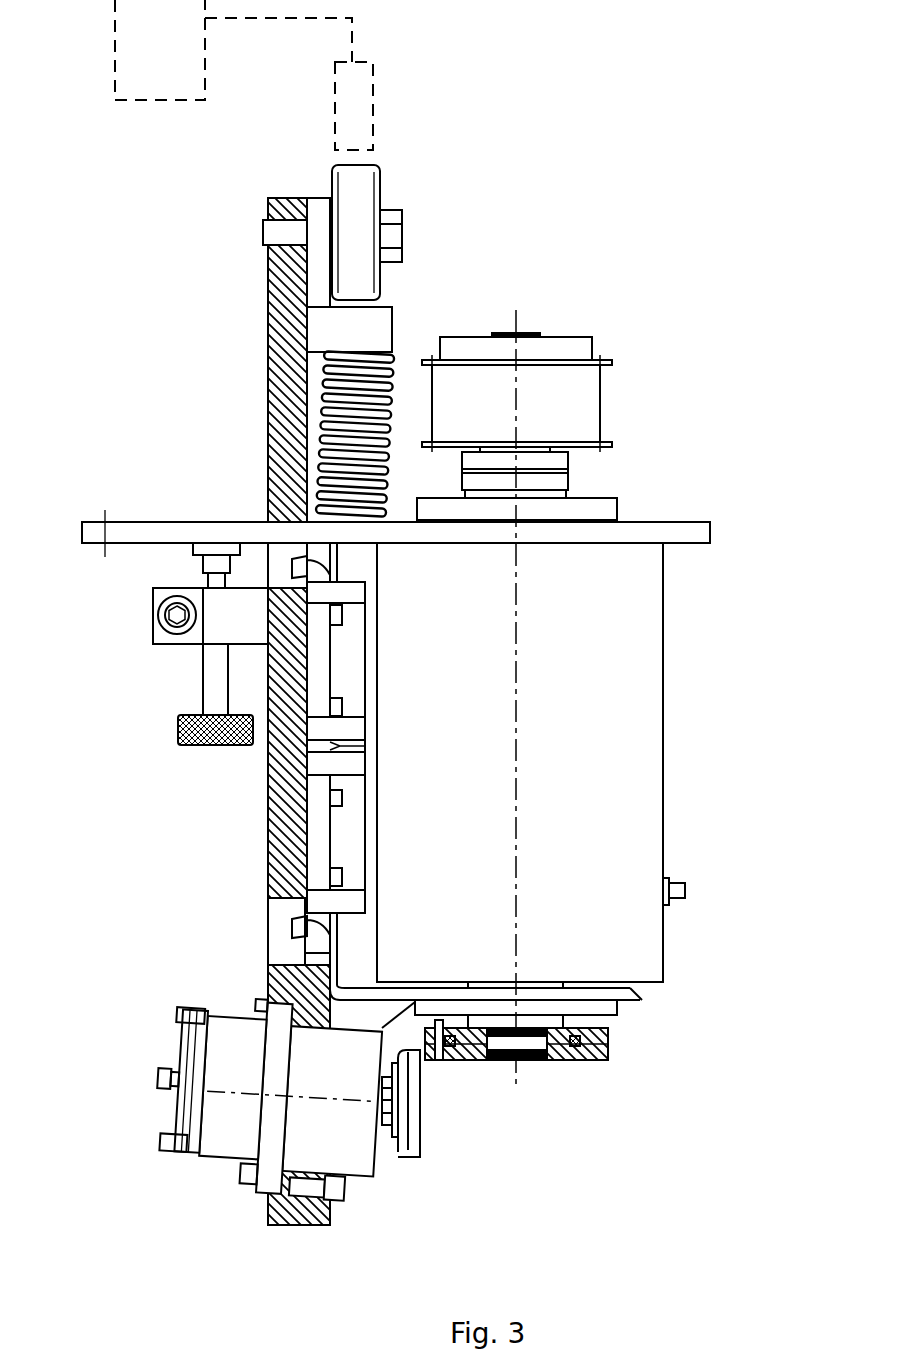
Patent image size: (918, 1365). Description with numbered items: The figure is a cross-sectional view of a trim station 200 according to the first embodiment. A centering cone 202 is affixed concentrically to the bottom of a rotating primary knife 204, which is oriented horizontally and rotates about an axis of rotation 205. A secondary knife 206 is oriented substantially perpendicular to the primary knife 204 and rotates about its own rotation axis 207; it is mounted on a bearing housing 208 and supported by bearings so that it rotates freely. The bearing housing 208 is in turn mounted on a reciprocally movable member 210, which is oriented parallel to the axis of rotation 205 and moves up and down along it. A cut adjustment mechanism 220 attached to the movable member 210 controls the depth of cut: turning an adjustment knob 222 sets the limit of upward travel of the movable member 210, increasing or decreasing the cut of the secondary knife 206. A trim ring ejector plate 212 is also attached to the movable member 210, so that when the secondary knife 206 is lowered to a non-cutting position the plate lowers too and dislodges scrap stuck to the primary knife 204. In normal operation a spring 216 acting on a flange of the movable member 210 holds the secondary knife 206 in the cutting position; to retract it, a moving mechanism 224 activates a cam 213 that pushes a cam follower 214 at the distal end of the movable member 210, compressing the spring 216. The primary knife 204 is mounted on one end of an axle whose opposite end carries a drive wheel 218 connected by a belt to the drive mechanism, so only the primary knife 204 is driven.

The trim station 200 is at (800, 661).
The centering cone 202 is at (582, 1058).
The primary knife 204 is at (610, 1058).
The axis of rotation 205 is at (543, 680).
The secondary knife 206 is at (420, 1155).
The rotation axis 207 is at (398, 1104).
The bearing housing 208 is at (222, 1163).
The movable member 210 is at (268, 878).
The trim ring ejector plate 212 is at (636, 998).
The cam 213 is at (335, 77).
The cam follower 214 is at (376, 165).
The spring 216 is at (397, 387).
The drive wheel 218 is at (600, 407).
The cut adjustment mechanism 220 is at (200, 652).
The adjustment knob 222 is at (180, 745).
The moving mechanism 224 is at (115, 57).